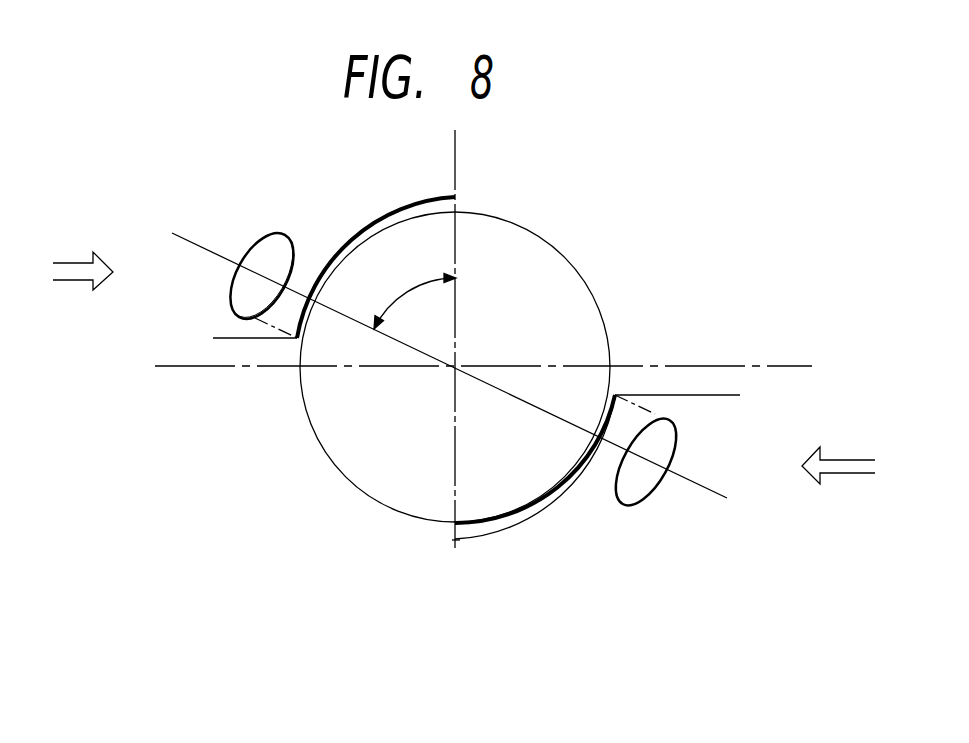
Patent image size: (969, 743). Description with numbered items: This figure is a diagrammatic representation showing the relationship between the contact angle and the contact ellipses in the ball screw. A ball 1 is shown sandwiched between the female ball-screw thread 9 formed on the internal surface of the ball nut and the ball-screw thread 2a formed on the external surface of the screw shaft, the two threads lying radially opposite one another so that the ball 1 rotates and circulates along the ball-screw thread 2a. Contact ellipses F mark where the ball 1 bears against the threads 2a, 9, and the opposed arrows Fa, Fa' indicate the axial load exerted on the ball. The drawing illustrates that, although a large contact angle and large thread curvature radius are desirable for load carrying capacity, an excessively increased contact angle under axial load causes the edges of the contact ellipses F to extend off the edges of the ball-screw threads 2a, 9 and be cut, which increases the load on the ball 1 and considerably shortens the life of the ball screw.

The ball 1 is at (528, 238).
The female ball-screw thread 9 is at (400, 220).
The ball-screw thread 2a is at (535, 512).
The contact ellipses F is at (265, 250).
The actuating force Fa is at (83, 290).
The actuating force (opposite) Fa' is at (838, 480).